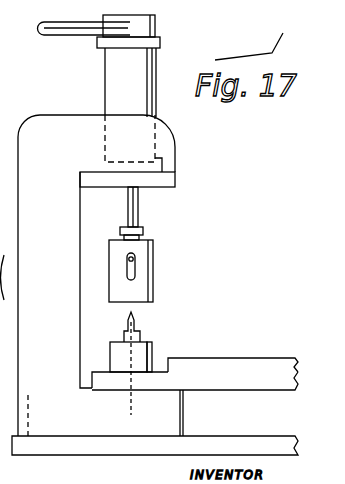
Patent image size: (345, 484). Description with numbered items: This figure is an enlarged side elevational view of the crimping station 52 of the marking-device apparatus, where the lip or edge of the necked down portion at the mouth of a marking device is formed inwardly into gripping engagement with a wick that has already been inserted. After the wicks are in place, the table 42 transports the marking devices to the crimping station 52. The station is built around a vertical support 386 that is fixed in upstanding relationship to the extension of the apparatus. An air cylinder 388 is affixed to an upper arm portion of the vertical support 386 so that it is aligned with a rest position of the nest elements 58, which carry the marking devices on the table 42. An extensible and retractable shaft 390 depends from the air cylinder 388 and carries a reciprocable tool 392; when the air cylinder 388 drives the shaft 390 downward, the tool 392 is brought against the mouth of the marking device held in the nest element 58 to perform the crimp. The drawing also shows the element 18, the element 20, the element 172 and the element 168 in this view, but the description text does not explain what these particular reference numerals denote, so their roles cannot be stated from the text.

The air cylinder 388 is at (153, 68).
The crimping station 52 is at (243, 190).
The extensible and retractable shaft 390 is at (147, 203).
The spindle rod 18 is at (108, 218).
The reciprocable tool 392 is at (160, 250).
The vertical support 386 is at (62, 323).
The pin 20 is at (144, 325).
The nest elements 58 is at (162, 352).
The workpiece plate 172 is at (268, 367).
The table 42 is at (246, 395).
The base plate 168 is at (58, 443).